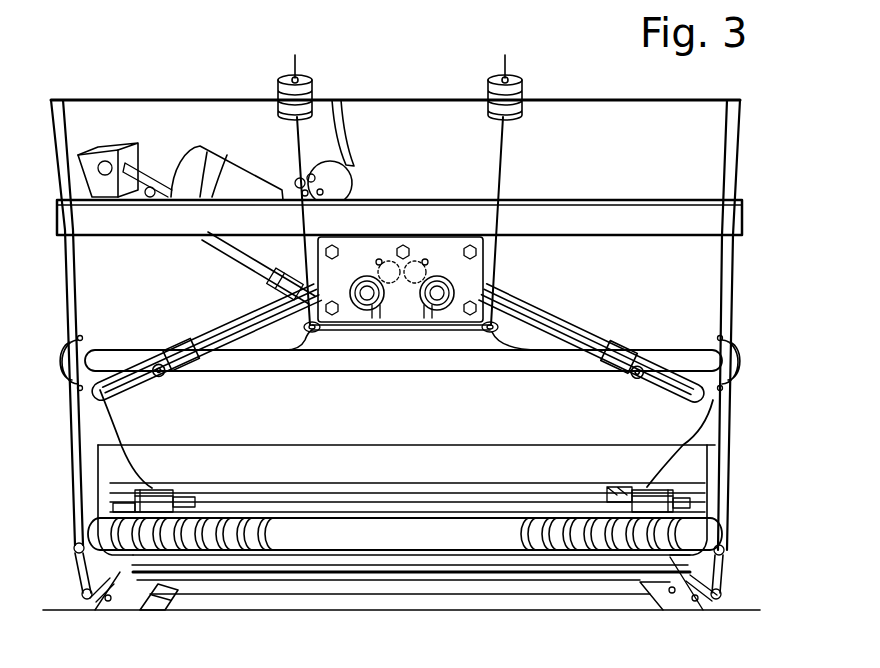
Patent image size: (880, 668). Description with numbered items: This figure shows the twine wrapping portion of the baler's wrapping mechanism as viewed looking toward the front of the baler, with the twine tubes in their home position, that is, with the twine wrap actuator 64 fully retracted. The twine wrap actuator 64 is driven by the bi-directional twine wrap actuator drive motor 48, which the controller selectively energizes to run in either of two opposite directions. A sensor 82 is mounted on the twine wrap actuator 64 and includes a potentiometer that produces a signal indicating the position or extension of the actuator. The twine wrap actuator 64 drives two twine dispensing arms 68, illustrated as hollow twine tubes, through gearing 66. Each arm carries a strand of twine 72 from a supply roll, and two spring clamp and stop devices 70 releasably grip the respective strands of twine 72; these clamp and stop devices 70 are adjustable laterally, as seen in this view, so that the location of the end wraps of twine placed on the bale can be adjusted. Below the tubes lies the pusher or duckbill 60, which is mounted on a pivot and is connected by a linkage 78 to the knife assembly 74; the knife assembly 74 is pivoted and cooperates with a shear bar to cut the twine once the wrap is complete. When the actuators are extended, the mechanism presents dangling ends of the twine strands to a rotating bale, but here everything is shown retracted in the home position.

The twine wrap actuator drive motor 48 is at (203, 163).
The sensor 82 is at (353, 181).
The twine wrap actuator 64 is at (235, 246).
The gearing 66 is at (428, 265).
The twine dispensing arms 68 is at (221, 324).
The strand of twine 72 is at (125, 448).
The spring clamp and stop devices 70 is at (186, 486).
The pusher or duckbill 60 is at (379, 532).
The knife assembly 74 is at (417, 566).
The linkage 78 is at (162, 610).